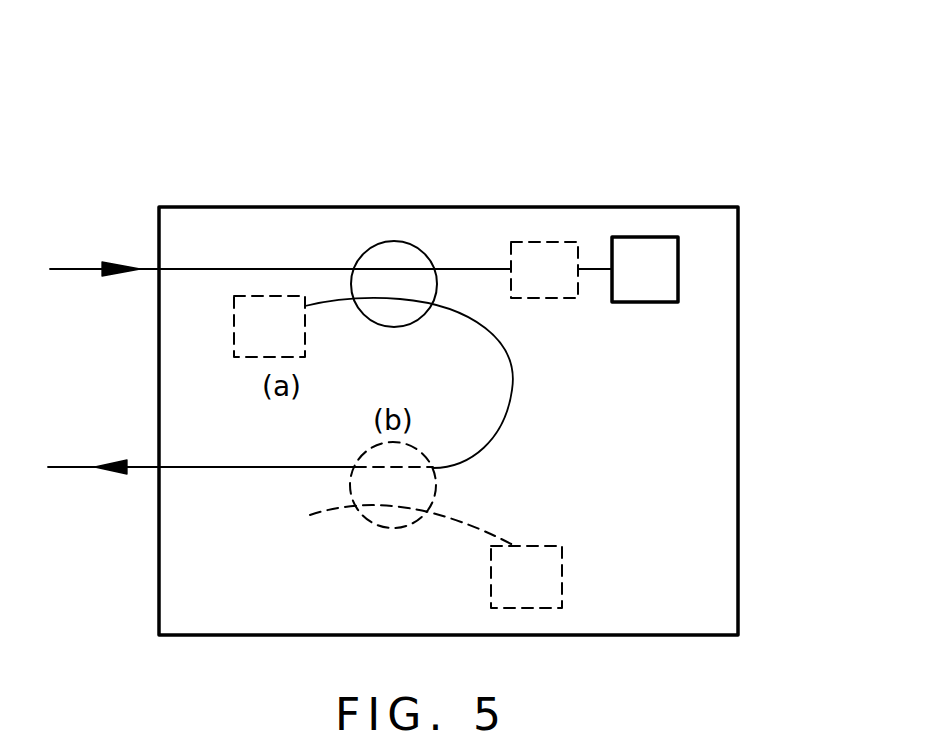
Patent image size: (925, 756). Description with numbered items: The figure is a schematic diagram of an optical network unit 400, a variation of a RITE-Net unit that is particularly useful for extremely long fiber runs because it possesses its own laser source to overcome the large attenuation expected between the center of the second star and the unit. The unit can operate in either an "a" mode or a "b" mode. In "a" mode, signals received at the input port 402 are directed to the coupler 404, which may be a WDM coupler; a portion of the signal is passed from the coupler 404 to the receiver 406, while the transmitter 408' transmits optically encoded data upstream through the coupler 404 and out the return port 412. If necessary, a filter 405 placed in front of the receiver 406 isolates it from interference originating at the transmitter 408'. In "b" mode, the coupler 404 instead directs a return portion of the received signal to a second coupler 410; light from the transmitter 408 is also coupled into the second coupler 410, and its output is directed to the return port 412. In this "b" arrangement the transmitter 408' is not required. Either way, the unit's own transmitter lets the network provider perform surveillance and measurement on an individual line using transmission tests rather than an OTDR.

The optical network unit 400 is at (723, 134).
The input port 402 is at (157, 268).
The coupler 404 is at (402, 242).
The filter 405 is at (561, 290).
The receiver 406 is at (650, 240).
The transmitter 408 is at (567, 559).
The transmitter 408' is at (373, 382).
The second coupler 410 is at (418, 450).
The return port 412 is at (158, 466).